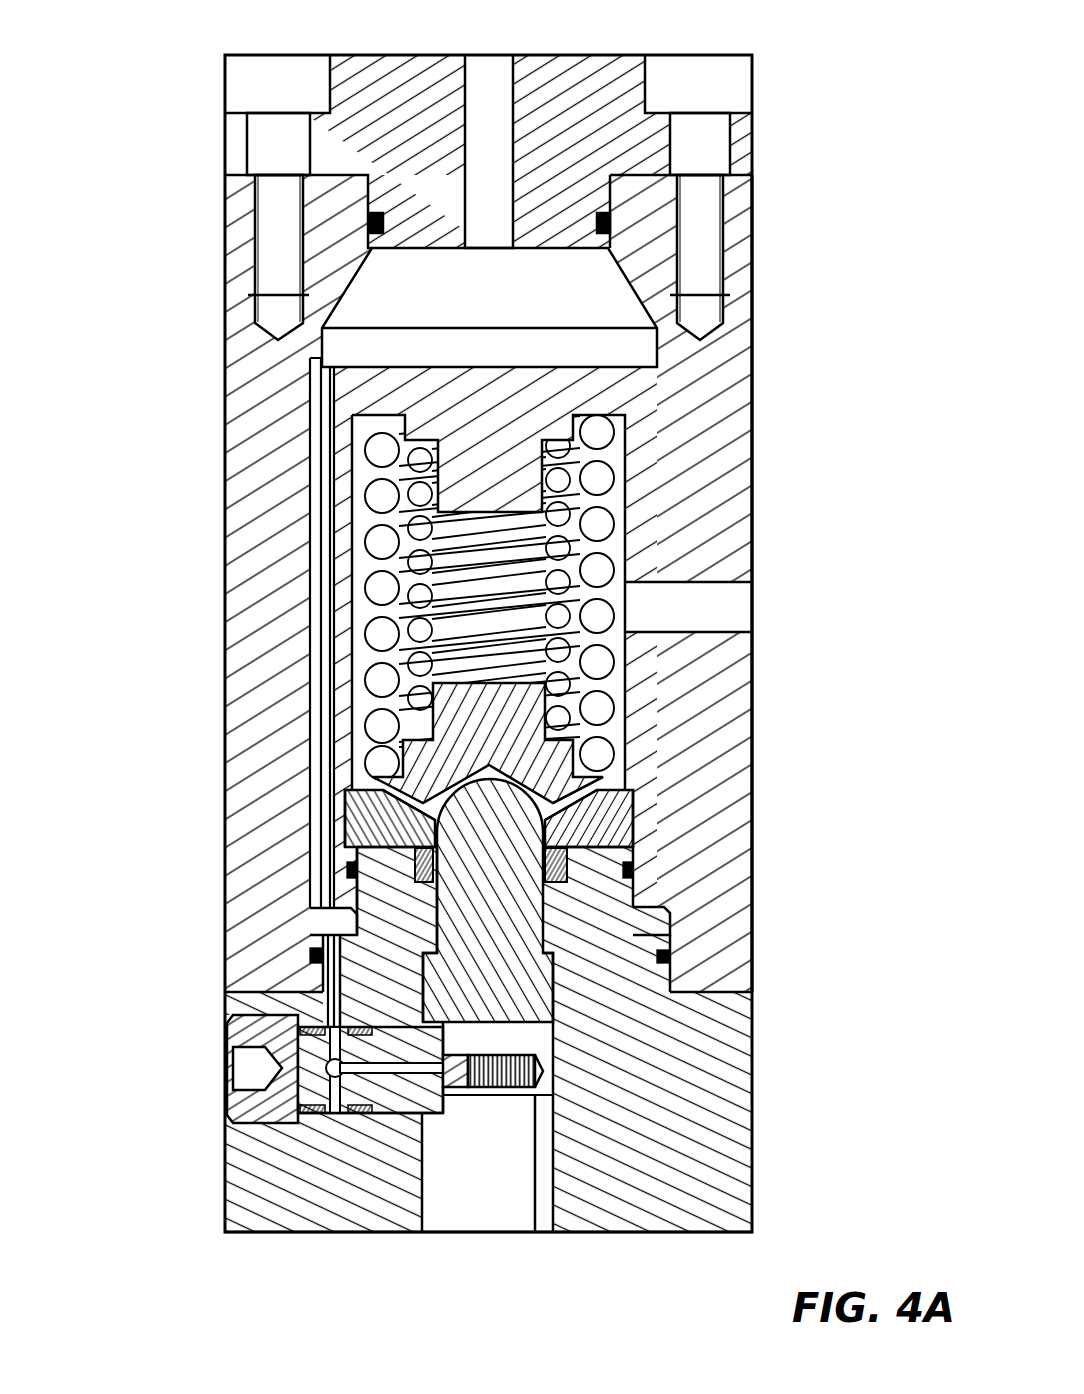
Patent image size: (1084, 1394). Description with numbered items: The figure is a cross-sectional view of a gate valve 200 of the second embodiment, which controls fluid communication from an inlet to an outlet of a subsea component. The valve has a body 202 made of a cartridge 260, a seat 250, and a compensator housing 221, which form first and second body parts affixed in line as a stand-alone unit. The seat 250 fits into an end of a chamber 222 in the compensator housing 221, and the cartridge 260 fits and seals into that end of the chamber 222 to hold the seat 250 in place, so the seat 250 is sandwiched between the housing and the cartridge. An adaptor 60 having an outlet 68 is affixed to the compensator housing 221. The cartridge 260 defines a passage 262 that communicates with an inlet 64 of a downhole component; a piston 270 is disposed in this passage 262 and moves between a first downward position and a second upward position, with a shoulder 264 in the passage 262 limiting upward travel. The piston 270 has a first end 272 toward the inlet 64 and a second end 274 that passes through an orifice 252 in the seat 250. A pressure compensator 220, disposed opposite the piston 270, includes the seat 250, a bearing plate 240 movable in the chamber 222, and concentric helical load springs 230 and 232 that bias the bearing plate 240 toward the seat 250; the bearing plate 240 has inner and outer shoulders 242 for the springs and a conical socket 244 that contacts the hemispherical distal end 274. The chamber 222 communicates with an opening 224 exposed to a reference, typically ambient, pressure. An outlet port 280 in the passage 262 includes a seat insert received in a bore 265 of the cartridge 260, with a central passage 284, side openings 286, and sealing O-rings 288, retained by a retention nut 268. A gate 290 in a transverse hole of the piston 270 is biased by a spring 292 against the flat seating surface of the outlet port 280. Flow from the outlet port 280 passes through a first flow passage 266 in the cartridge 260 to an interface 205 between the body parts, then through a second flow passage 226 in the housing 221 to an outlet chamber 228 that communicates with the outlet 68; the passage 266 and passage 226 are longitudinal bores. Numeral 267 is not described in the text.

The adaptor 60 is at (755, 140).
The inlet 64 is at (478, 1183).
The outlet 68 is at (479, 78).
The gate valve 200 is at (141, 347).
The body 202 is at (836, 573).
The interface 205 is at (670, 918).
The pressure compensator 220 is at (196, 221).
The compensator housing 221 is at (755, 232).
The chamber 222 is at (625, 490).
The opening 224 is at (755, 612).
The second flow passage 226 is at (318, 395).
The outlet chamber 228 is at (356, 291).
The load spring 230 is at (365, 493).
The load spring 232 is at (420, 535).
The bearing plate 240 is at (604, 777).
The inner and outer shoulders 242 is at (615, 715).
The conical socket 244 is at (430, 783).
The seat 250 is at (636, 802).
The orifice 252 is at (567, 868).
The cartridge 260 is at (755, 1025).
The passage 262 is at (545, 1222).
The shoulder 264 is at (557, 972).
The bore 265 is at (402, 1110).
The first flow passage 266 is at (330, 980).
The seat body 267 is at (353, 847).
The retention nut 268 is at (230, 1100).
The piston 270 is at (433, 903).
The first end 272 is at (548, 1098).
The second end 274 is at (560, 780).
The outlet port 280 is at (400, 1114).
The passage 284 is at (388, 1072).
The side openings 286 is at (333, 1112).
The O-rings 288 is at (305, 1110).
The gate 290 is at (450, 1090).
The spring 292 is at (485, 1088).